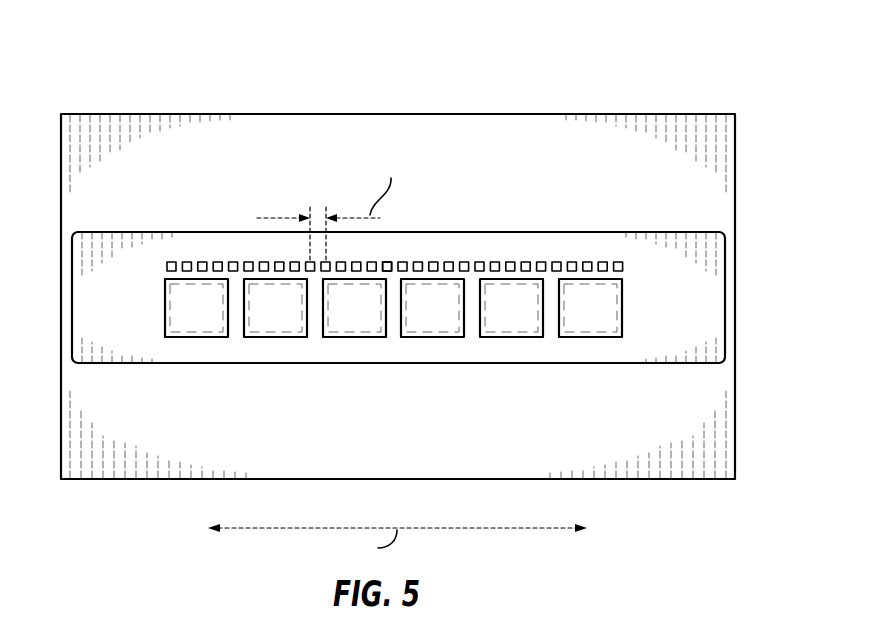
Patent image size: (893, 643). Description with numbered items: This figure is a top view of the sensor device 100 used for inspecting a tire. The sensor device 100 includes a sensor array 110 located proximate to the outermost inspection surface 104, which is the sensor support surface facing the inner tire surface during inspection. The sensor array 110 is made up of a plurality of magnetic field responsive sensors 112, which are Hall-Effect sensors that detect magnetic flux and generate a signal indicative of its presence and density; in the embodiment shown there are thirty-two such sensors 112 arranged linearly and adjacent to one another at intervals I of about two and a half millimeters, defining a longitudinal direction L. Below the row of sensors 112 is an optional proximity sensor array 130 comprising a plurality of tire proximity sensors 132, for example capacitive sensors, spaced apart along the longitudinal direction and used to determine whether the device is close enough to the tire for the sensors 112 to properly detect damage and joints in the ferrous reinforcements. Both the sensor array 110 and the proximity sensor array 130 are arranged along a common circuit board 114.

The sensor device 100 is at (414, 300).
The outermost inspection surface 104 is at (248, 126).
The sensor array 110 is at (172, 252).
The magnetic field responsive sensors 112 is at (388, 261).
The circuit board 114 is at (649, 252).
The proximity sensor array 130 is at (275, 325).
The tire proximity sensors 132 is at (596, 327).